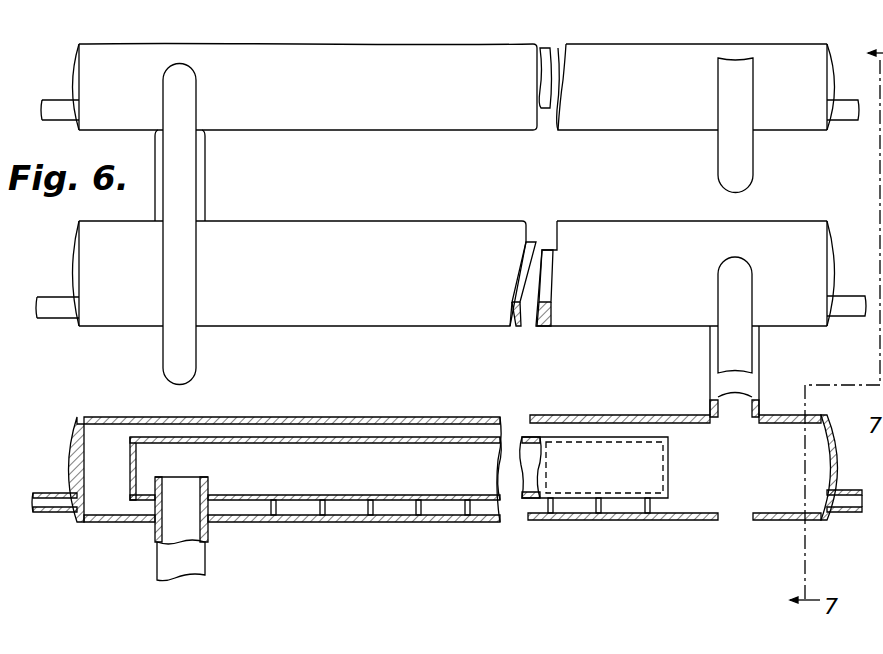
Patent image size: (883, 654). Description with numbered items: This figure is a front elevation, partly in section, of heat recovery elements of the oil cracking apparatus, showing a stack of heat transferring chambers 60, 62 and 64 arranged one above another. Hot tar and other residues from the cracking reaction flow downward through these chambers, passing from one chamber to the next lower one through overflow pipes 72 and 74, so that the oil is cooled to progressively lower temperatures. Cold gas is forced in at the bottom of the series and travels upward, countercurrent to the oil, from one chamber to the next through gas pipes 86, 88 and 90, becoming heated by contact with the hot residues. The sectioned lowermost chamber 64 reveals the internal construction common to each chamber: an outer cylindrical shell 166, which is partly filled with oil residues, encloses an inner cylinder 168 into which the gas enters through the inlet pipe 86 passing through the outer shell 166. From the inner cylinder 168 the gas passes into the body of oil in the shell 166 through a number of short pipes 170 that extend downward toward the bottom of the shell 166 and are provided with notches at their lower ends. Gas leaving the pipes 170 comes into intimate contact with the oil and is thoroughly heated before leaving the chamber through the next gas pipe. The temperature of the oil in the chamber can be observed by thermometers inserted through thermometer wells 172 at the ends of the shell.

The heat transferring chamber 60 is at (378, 122).
The heat transferring chamber 62 is at (383, 228).
The heat transferring chamber 64 is at (286, 419).
The overflow pipe 72 is at (193, 355).
The overflow pipe 74 is at (745, 348).
The gas pipe 86 is at (200, 562).
The gas pipe 88 is at (712, 360).
The gas pipe 90 is at (200, 178).
The outer cylindrical shell 166 is at (513, 326).
The inner cylinder 168 is at (553, 247).
The short pipes 170 is at (368, 503).
The thermometer wells 172 is at (63, 505).